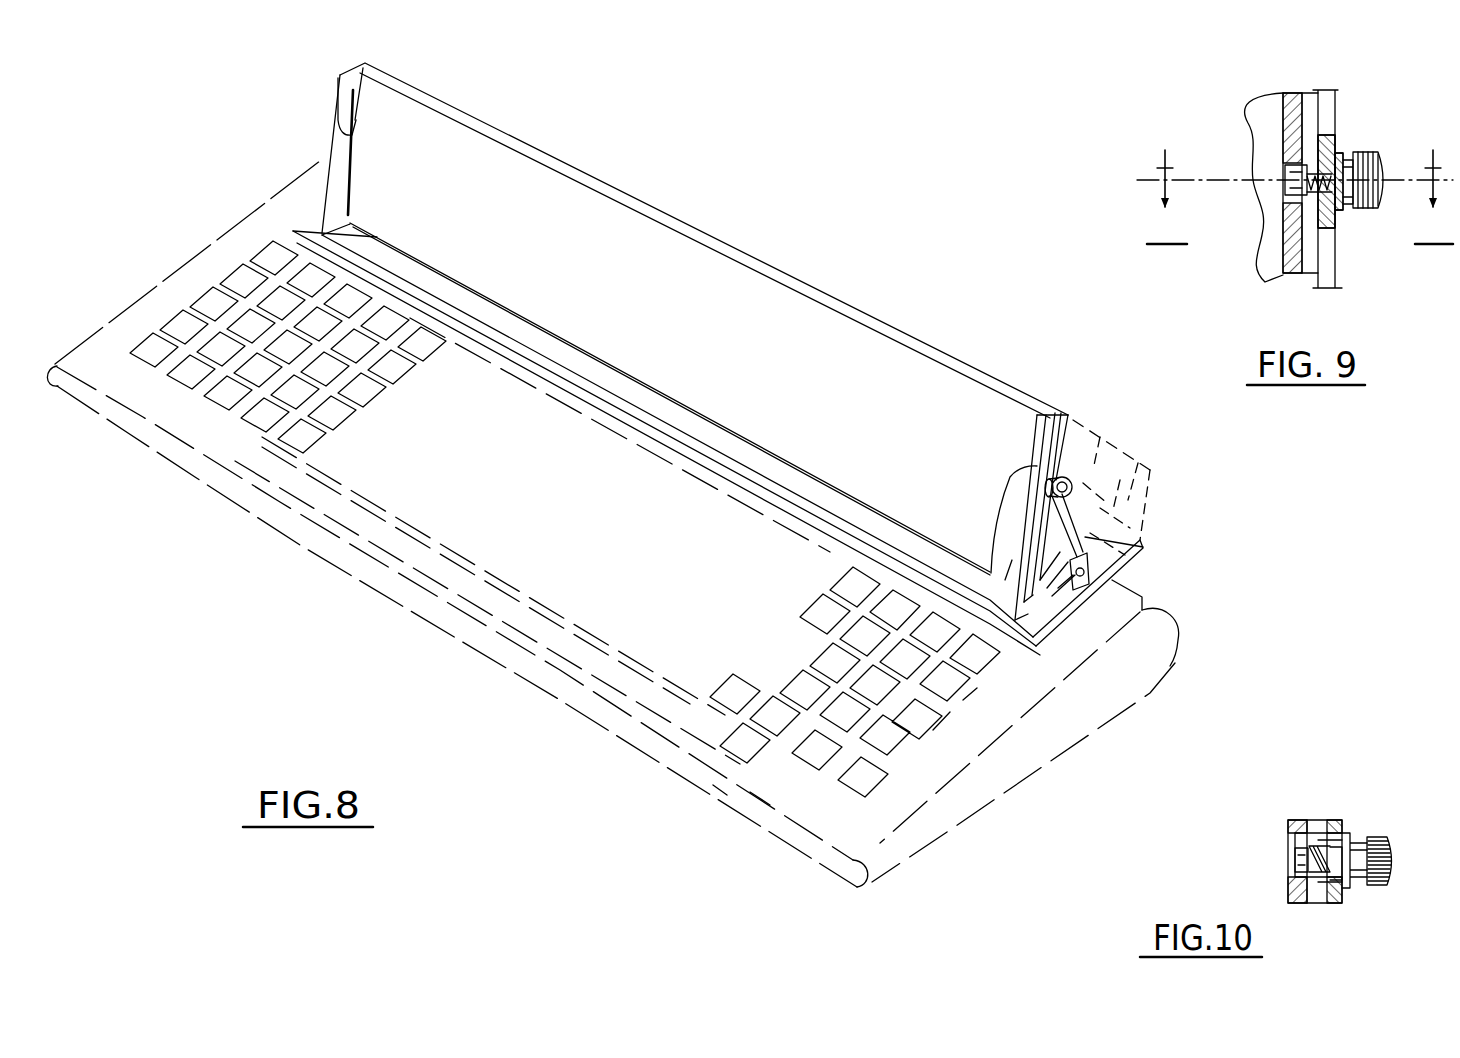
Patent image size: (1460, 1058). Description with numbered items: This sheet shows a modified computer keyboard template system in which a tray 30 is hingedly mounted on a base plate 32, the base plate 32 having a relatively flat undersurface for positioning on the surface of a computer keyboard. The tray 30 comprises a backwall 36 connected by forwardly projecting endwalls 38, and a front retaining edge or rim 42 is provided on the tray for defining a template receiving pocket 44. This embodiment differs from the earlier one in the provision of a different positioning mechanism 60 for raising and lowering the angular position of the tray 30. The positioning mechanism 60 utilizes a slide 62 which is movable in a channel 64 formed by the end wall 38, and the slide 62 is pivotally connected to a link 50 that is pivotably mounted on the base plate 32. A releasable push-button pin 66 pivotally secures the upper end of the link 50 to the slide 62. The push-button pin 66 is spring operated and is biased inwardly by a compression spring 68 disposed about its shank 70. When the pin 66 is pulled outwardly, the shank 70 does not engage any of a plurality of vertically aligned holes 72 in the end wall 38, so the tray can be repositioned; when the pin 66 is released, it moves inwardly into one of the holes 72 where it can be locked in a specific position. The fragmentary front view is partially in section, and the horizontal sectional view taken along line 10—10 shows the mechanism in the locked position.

In FIG. 8, the tray 30 is at (695, 350).
In FIG. 8, the base plate 32 is at (1060, 608).
In FIG. 8, the backwall 36 is at (628, 196).
In FIG. 8, the endwall 38 is at (352, 87).
In FIG. 9, the endwall 38 is at (1293, 93).
In FIG. 10, the endwall 38 is at (1300, 820).
In FIG. 8, the front retaining edge or rim 42 is at (487, 317).
In FIG. 8, the template receiving pocket 44 is at (421, 165).
In FIG. 8, the link 50 is at (1147, 547).
In FIG. 9, the link 50 is at (1327, 257).
In FIG. 10, the link 50 is at (1340, 845).
In FIG. 8, the positioning mechanism 60 is at (1069, 498).
In FIG. 9, the positioning mechanism 60 is at (1303, 173).
In FIG. 10, the positioning mechanism 60 is at (1309, 856).
In FIG. 8, the slide 62 is at (1053, 465).
In FIG. 10, the slide 62 is at (1352, 852).
In FIG. 8, the channel 64 is at (1062, 412).
In FIG. 10, the channel 64 is at (1323, 892).
In FIG. 8, the releasable push-button pin 66 is at (1068, 488).
In FIG. 9, the releasable push-button pin 66 is at (1368, 152).
In FIG. 10, the releasable push-button pin 66 is at (1378, 895).
In FIG. 9, the compression spring 68 is at (1312, 200).
In FIG. 10, the compression spring 68 is at (1323, 832).
In FIG. 9, the shank 70 is at (1287, 181).
In FIG. 10, the shank 70 is at (1297, 860).
In FIG. 8, the vertically aligned holes 72 is at (1037, 503).
In FIG. 9, the vertically aligned holes 72 is at (1290, 120).
In FIG. 9, the section line 10- 10 is at (1300, 198).